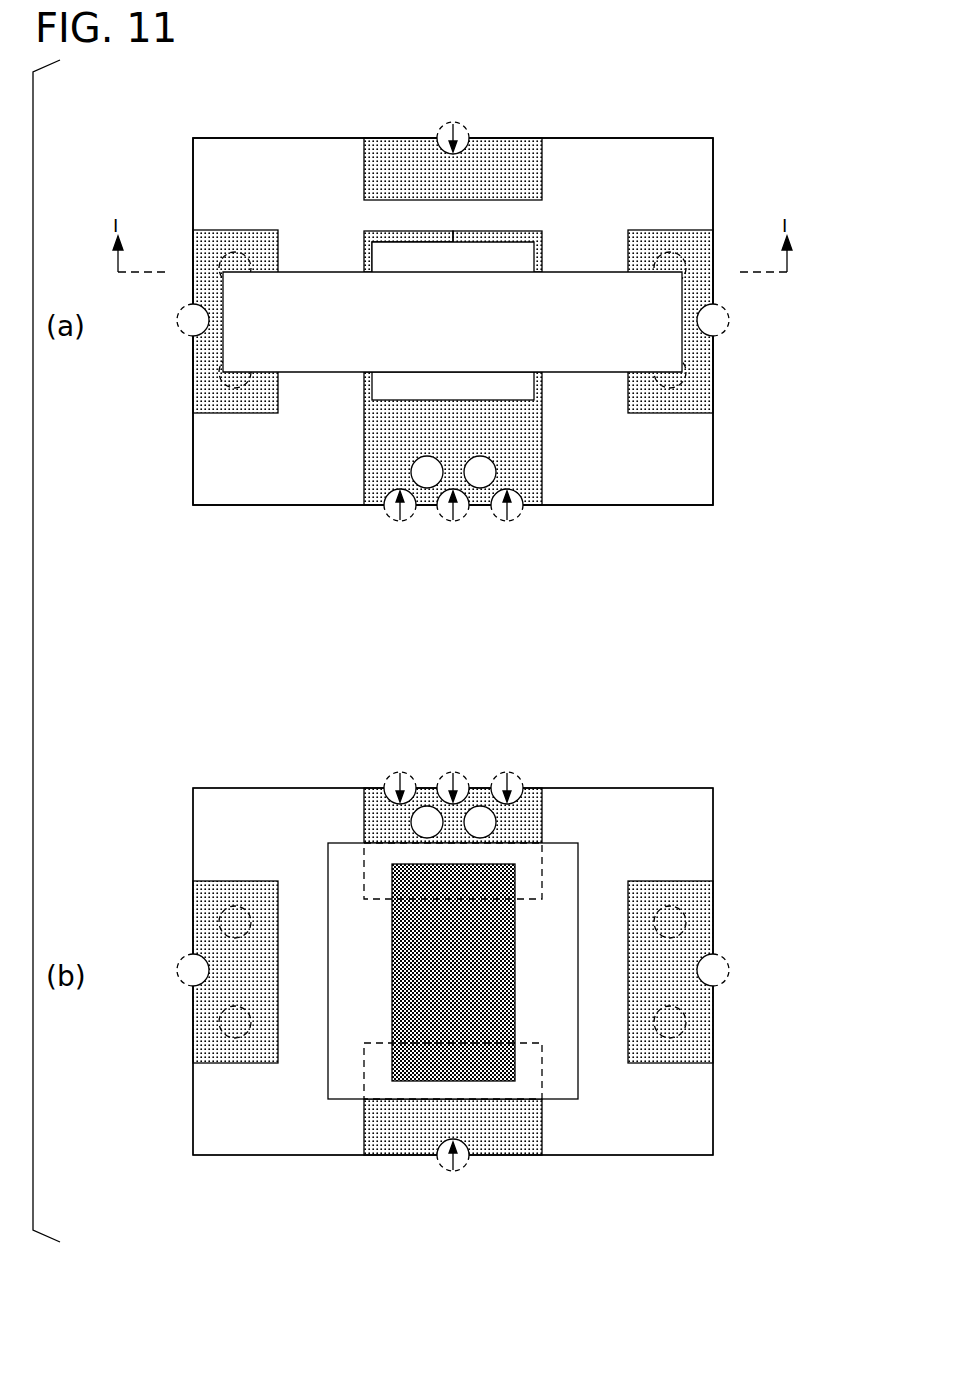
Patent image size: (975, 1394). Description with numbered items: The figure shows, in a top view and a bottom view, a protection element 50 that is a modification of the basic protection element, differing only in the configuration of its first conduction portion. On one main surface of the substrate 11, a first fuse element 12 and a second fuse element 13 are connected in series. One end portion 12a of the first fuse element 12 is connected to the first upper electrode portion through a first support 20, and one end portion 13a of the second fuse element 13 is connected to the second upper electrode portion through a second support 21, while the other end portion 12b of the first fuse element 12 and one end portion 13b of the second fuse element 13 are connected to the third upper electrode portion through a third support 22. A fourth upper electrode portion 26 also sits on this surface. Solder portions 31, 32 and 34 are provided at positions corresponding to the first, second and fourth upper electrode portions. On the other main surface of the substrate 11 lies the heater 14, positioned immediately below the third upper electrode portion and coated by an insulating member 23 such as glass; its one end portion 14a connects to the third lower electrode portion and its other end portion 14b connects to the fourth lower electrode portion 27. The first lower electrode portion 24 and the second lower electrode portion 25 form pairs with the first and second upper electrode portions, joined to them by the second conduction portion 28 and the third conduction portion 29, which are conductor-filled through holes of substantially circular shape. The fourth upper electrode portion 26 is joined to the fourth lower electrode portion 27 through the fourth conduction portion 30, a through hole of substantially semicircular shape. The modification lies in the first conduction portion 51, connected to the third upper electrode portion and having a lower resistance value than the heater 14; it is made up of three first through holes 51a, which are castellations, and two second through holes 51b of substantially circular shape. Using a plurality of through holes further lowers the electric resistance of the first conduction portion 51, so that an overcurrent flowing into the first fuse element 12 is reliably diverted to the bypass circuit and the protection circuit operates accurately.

The protection element 50 is at (738, 100).
The substrate 11 is at (675, 160).
The first fuse element 12 is at (290, 310).
The second fuse element 13 is at (612, 310).
The one end portion of the first fuse element 12a is at (245, 327).
The one end portion of the second fuse element 13a is at (655, 327).
The other end portion of the first fuse element 12b is at (365, 310).
The one end portion of the second fuse element 13b is at (537, 310).
The first support 20 is at (235, 245).
The second support 21 is at (668, 245).
The third support 22 is at (395, 392).
The insulating member 23 is at (345, 1100).
The first lower electrode portion 24 is at (245, 975).
The second lower electrode portion 25 is at (688, 946).
The fourth upper electrode portion 26 is at (428, 160).
The fourth lower electrode portion 27 is at (393, 1140).
The second conduction portion 28 is at (200, 250).
The third conduction portion 29 is at (690, 250).
The fourth conduction portion 30 is at (466, 128).
The solder portion 31 is at (176, 324).
The solder portion 32 is at (731, 322).
The solder portion 34 is at (446, 122).
The heater 14 is at (485, 968).
The one end portion of the heater 14a is at (453, 880).
The other end portion of the heater 14b is at (452, 1068).
The first conduction portion 51 is at (451, 647).
The first through hole 51a is at (506, 508).
The second through hole 51b is at (410, 472).